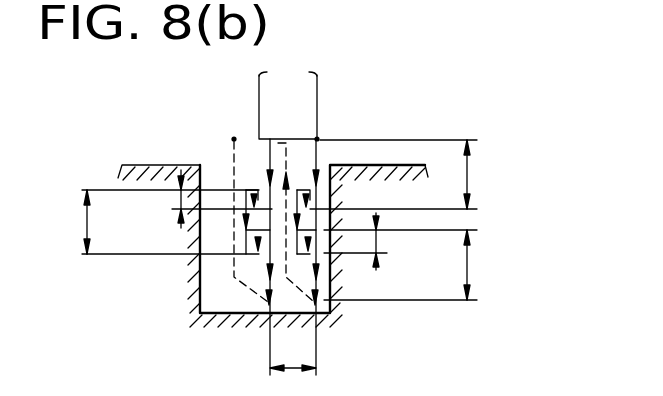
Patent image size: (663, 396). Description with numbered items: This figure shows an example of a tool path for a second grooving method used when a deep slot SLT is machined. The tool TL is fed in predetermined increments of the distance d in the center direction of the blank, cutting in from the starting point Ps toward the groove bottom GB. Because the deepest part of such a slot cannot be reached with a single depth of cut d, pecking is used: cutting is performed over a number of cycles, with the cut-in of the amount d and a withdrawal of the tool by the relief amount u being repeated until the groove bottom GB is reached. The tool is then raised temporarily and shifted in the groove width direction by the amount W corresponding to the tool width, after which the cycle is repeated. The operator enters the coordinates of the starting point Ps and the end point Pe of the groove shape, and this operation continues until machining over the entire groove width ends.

The tool TL is at (299, 92).
The starting point Ps is at (319, 137).
The end point Pe is at (232, 136).
The deep slot SLT is at (202, 296).
The groove bottom GB is at (219, 313).
The predetermined amount d is at (275, 220).
The relief amount u is at (278, 220).
The amount corresponding to tool width W is at (293, 344).